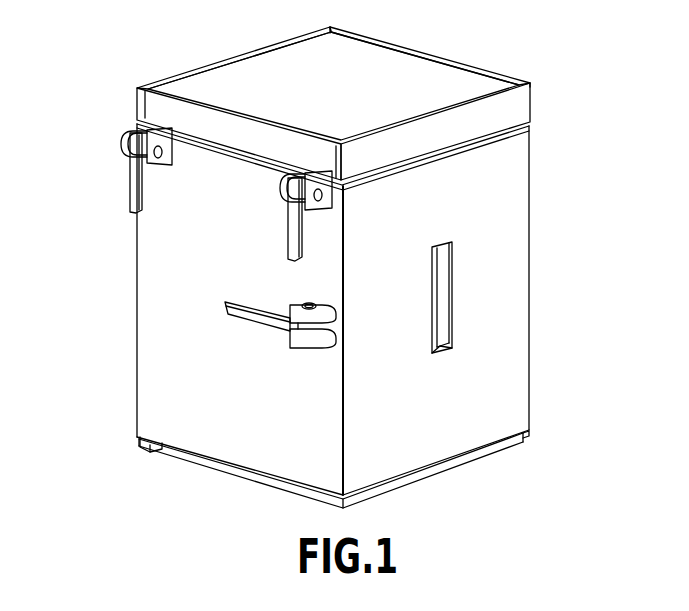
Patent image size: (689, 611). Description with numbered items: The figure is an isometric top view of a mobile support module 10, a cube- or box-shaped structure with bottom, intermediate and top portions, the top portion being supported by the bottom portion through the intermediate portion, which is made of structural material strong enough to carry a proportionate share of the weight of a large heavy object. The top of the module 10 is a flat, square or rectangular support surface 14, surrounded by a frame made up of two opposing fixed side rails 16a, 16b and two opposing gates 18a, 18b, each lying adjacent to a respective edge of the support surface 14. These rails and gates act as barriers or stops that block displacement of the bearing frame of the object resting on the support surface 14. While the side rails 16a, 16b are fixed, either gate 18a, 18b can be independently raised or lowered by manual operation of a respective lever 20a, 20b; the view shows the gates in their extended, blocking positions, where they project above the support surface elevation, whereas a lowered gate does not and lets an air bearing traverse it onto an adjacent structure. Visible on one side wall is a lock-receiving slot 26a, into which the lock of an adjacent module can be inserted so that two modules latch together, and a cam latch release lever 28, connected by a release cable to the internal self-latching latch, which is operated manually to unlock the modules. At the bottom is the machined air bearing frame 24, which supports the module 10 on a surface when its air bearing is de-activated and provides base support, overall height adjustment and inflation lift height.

The mobile support module 10 is at (507, 36).
The support surface 14 is at (225, 82).
The side rail 16a is at (157, 105).
The side rail 16b is at (398, 45).
The gate 18a is at (520, 100).
The gate 18b is at (262, 45).
The lever 20a is at (288, 228).
The lever 20b is at (128, 187).
The air bearing frame 24 is at (137, 443).
The lock-receiving slot 26a is at (452, 288).
The cam latch release lever 28 is at (225, 315).